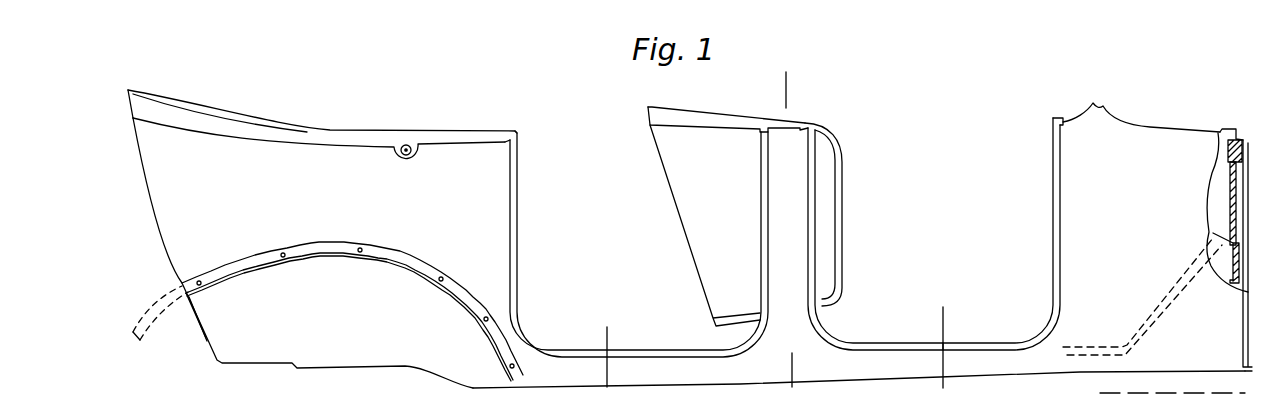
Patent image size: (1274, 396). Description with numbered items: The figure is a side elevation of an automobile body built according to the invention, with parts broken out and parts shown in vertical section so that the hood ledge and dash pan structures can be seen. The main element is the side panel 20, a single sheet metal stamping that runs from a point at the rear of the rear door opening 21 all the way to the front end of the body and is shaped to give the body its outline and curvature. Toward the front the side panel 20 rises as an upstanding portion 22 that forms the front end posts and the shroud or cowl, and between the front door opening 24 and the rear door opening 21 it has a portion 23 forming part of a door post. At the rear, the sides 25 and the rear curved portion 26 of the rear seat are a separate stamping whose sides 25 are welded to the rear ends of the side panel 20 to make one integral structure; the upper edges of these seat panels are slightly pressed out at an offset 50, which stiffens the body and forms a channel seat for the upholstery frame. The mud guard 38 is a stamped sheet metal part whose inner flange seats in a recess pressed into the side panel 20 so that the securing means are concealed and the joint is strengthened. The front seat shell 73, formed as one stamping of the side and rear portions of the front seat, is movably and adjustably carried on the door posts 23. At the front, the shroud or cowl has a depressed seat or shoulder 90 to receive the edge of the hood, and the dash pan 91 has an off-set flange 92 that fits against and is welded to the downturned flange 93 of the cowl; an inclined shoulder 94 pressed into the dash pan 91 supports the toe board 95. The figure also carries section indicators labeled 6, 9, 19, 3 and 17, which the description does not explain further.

The side panel 20 is at (500, 248).
The rear door opening 21 is at (555, 154).
The upstanding portion 22 is at (1035, 159).
The door post portion 23 is at (805, 205).
The front door opening 24 is at (947, 258).
The sides of rear seat 25 is at (443, 152).
The rear curved portion of rear seat 26 is at (147, 179).
The mud guard 38 is at (412, 267).
The offset upper edge 50 is at (201, 128).
The front seat shell 73 is at (682, 205).
The seat or shoulder 90 is at (1236, 128).
The dash pan 91 is at (1226, 205).
The off-set flange 92 is at (1157, 235).
The downturned flange 93 is at (1251, 151).
The inclined shoulder 94 is at (1240, 246).
The toe board 95 is at (1142, 294).
The section line 6 is at (648, 327).
The section line 9 is at (985, 312).
The section line 19 is at (835, 83).
The section line 3 is at (1254, 379).
The section line 17 is at (1187, 391).